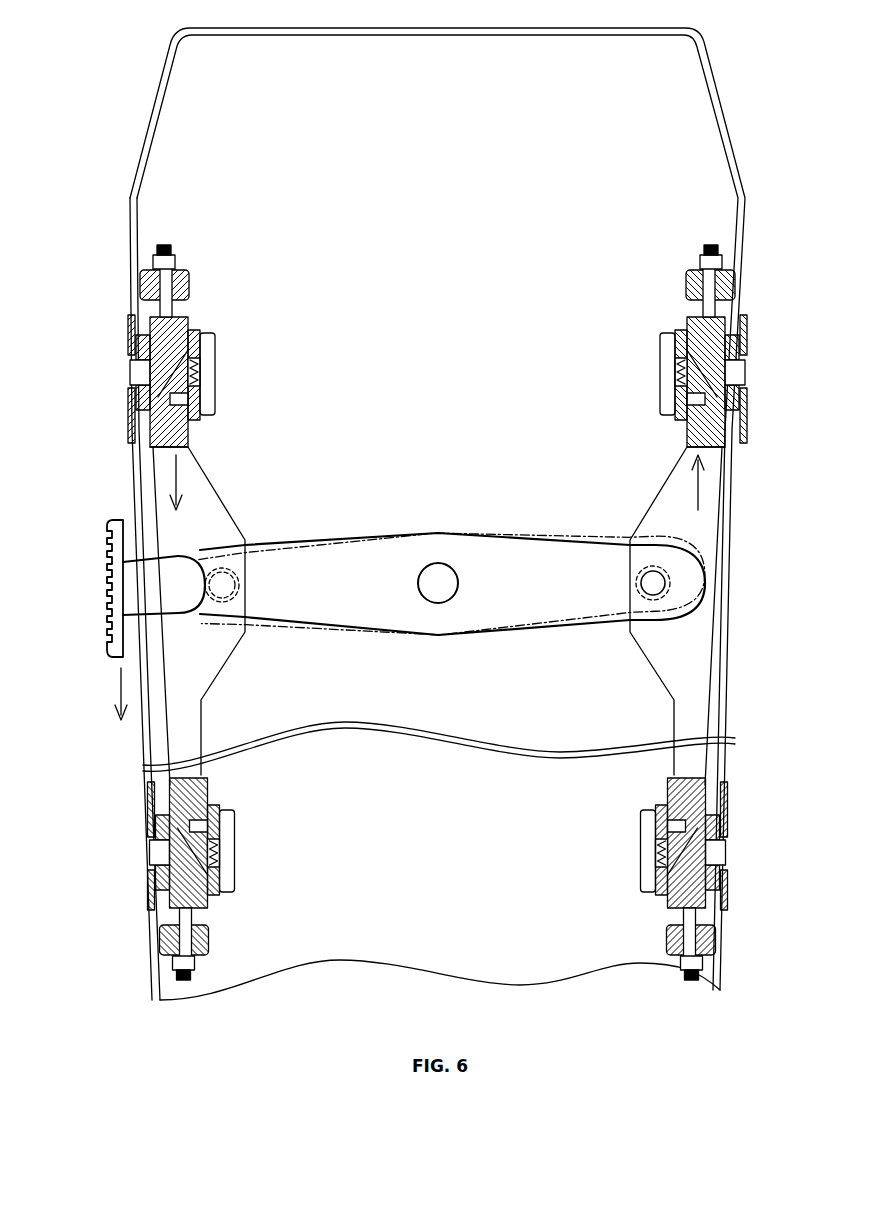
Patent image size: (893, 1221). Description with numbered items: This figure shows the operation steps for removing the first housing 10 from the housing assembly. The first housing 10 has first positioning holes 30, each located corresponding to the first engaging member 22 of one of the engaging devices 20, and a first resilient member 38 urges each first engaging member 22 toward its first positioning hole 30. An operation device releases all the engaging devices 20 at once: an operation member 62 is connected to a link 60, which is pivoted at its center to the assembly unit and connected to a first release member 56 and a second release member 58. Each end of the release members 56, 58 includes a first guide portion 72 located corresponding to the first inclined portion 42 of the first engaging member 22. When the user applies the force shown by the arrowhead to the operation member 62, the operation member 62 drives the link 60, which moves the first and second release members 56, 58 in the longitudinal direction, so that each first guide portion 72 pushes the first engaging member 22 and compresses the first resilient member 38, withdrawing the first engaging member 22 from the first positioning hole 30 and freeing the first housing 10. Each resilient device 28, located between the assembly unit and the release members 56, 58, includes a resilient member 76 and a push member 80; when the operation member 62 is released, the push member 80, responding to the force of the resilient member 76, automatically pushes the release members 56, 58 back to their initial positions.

The first housing 10 is at (130, 193).
The engaging device 20 is at (208, 430).
The first engaging member 22 is at (132, 397).
The resilient device 28 is at (188, 253).
The first positioning hole 30 is at (145, 355).
The first resilient member 38 is at (202, 372).
The first inclined portion 42 is at (206, 390).
The first release member 56 is at (178, 728).
The second release member 58 is at (690, 708).
The link 60 is at (503, 556).
The operation member 62 is at (107, 590).
The first guide portion 72 is at (140, 374).
The resilient member 76 is at (165, 245).
The push member 80 is at (172, 305).